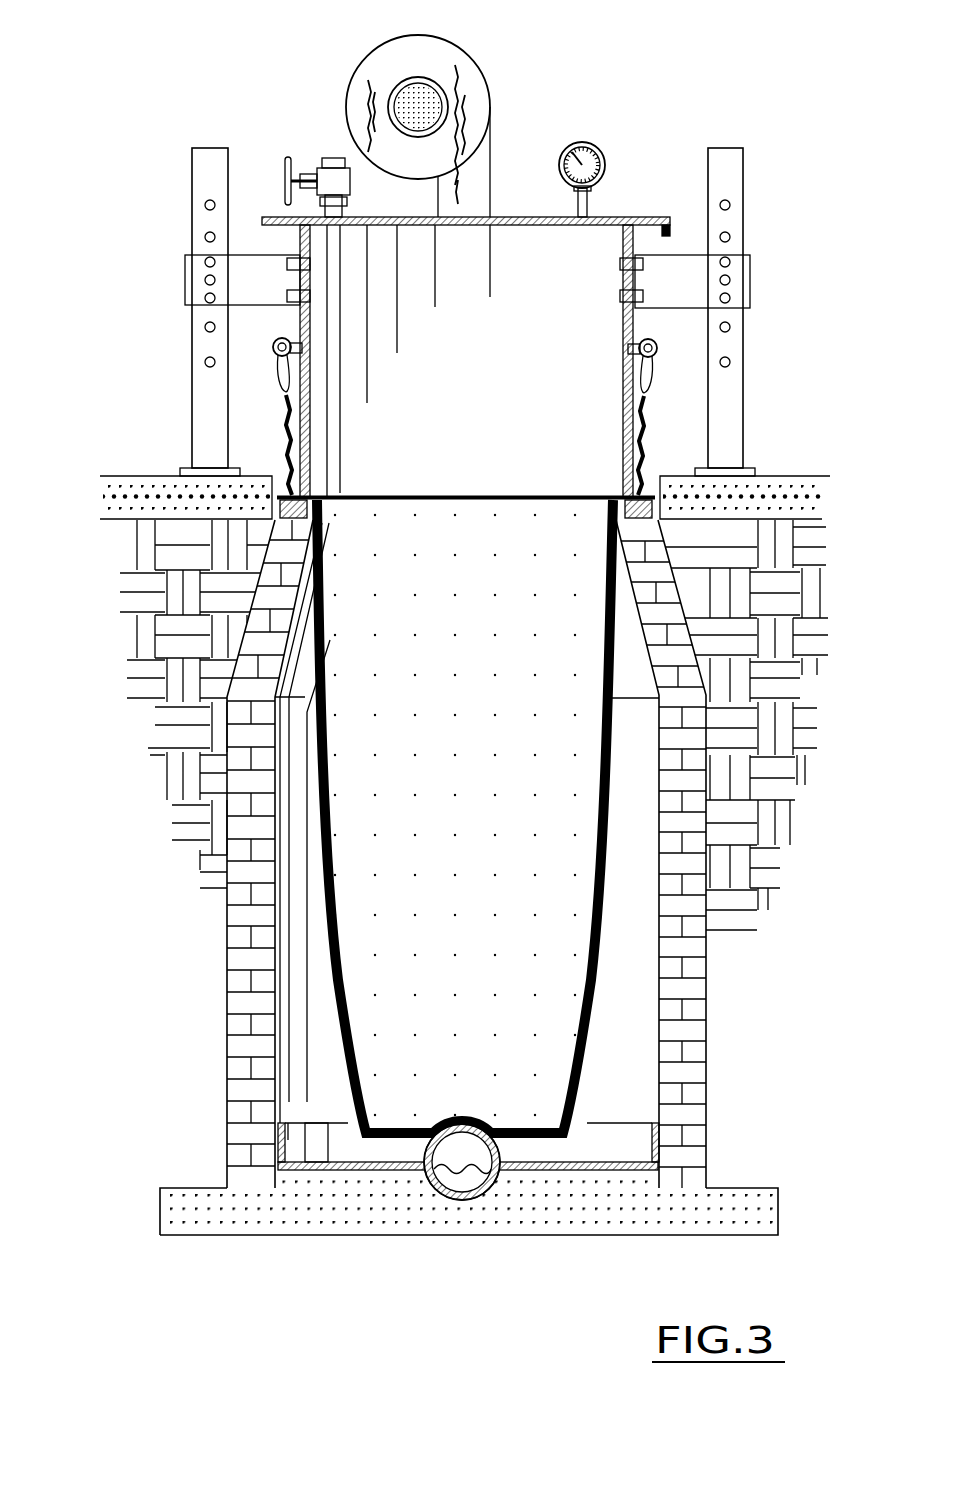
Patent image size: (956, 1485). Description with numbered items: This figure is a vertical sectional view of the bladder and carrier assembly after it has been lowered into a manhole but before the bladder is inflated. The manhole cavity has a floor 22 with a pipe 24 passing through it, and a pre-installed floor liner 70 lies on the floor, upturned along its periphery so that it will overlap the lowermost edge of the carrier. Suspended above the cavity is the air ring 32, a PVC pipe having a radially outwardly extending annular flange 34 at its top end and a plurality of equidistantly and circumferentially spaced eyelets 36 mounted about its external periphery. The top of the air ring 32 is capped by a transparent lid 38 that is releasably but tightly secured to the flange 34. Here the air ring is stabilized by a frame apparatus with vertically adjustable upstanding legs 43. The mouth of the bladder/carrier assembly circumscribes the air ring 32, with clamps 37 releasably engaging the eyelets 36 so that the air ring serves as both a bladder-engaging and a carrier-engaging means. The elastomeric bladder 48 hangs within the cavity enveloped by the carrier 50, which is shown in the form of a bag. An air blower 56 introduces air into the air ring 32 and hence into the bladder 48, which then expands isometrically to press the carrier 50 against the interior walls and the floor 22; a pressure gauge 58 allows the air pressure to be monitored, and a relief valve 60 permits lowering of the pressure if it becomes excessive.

The floor 22 is at (600, 1172).
The pipe 24 is at (462, 1202).
The air ring 32 is at (312, 385).
The annular flange 34 is at (663, 240).
The eyelets 36 is at (655, 352).
The clamps 37 is at (272, 375).
The transparent lid 38 is at (617, 217).
The upstanding legs 43 is at (197, 172).
The elastomeric bladder 48 is at (600, 841).
The carrier 50 is at (330, 936).
The air blower 56 is at (483, 78).
The pressure gauge 58 is at (585, 141).
The relief valve 60 is at (330, 156).
The floor liner 70 is at (602, 1115).